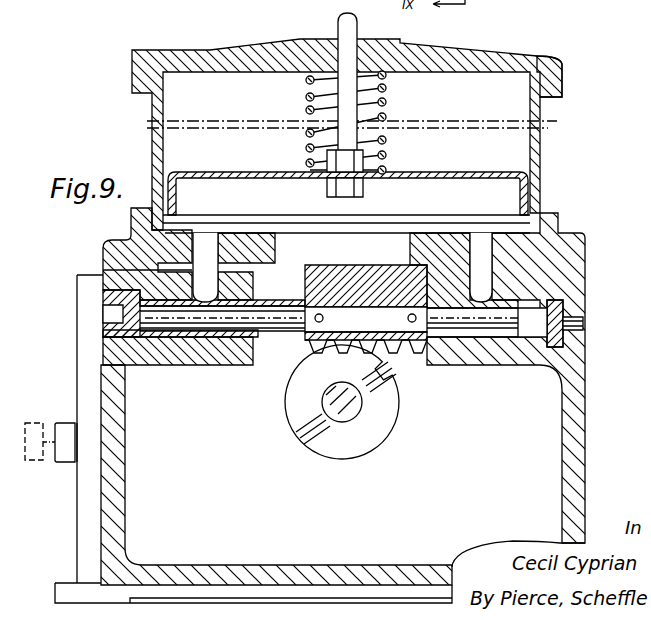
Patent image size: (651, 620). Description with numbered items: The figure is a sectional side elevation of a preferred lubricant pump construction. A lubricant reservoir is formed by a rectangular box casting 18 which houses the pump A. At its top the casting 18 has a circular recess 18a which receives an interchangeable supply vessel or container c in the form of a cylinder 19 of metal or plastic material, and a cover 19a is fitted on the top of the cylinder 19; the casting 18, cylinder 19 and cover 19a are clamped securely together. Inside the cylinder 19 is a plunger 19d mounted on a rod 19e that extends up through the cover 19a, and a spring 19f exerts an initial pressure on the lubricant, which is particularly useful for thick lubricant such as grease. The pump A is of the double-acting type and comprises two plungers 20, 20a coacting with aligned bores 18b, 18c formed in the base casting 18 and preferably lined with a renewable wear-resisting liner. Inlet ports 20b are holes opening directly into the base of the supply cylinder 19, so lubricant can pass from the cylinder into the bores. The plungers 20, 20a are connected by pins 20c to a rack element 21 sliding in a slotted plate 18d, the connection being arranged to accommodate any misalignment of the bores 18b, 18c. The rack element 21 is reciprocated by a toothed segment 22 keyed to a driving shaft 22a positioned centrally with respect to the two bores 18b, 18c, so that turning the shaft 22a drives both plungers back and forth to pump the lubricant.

The rectangular box casting 18 is at (570, 494).
The circular recess 18a is at (465, 226).
The pump bore 18b is at (183, 358).
The pump bore 18c is at (540, 365).
The slotted plate 18d is at (292, 280).
The cylinder 19 is at (541, 103).
The cover 19a is at (543, 58).
The plunger 19d is at (463, 172).
The rod 19e is at (349, 97).
The spring 19f is at (306, 97).
The pump plunger 20 is at (278, 320).
The pump plunger 20a is at (481, 322).
The inlet ports 20b is at (204, 285).
The pins 20c is at (407, 318).
The rack element 21 is at (400, 352).
The toothed segment 22 is at (380, 437).
The driving shaft 22a is at (340, 408).
The pump A is at (594, 324).
The supply vessel or container c is at (524, 152).